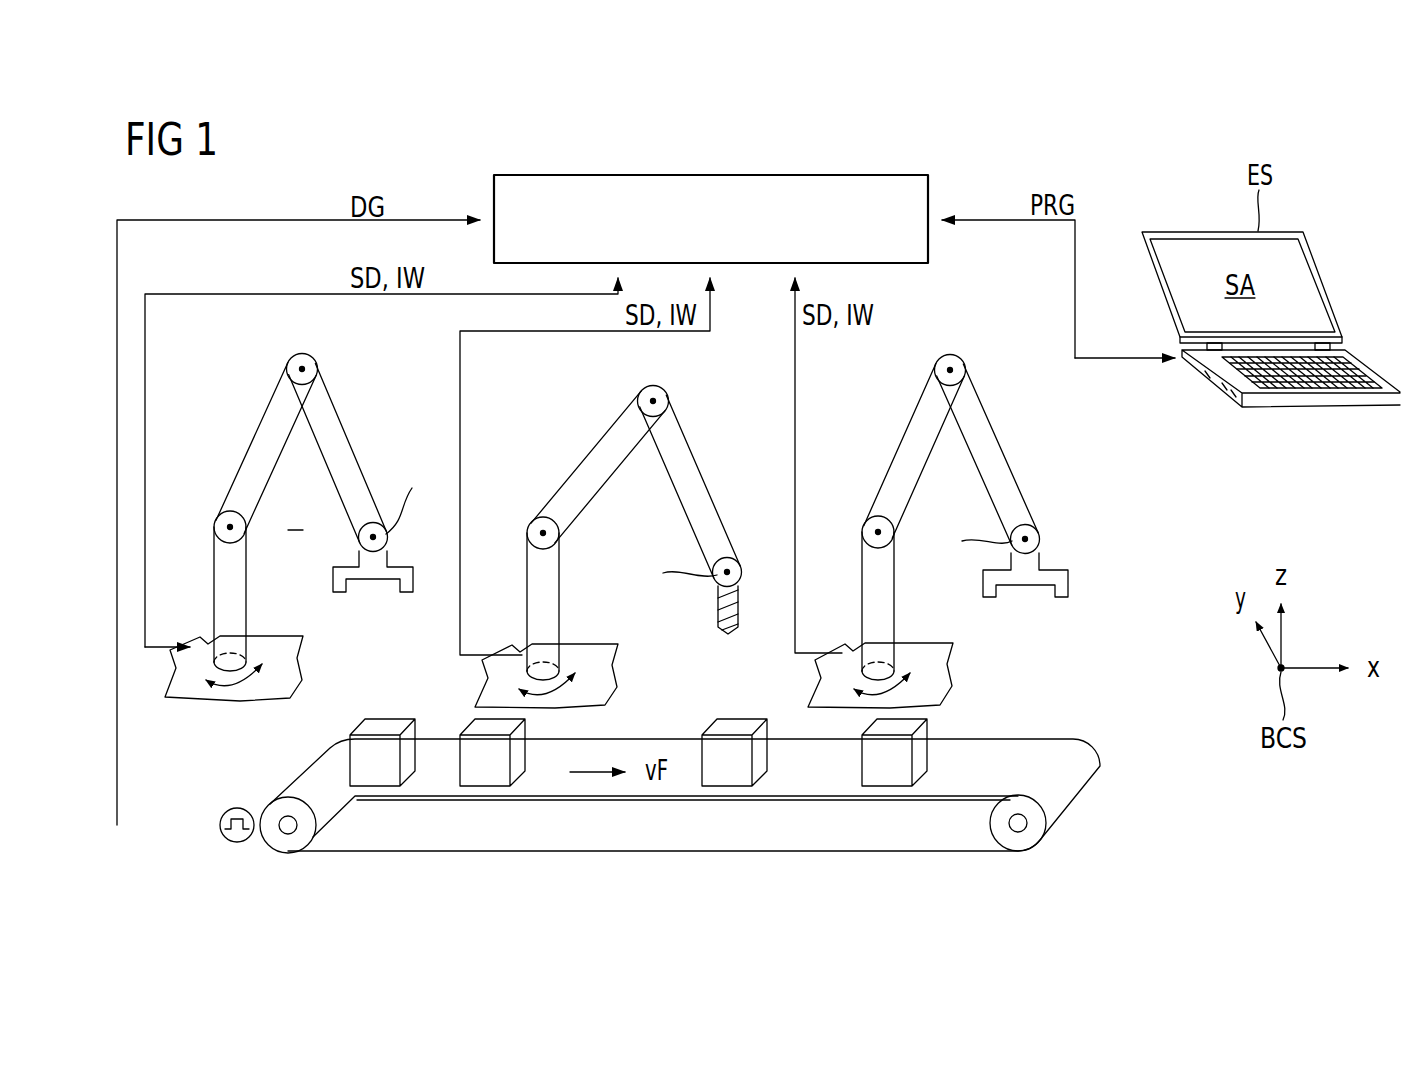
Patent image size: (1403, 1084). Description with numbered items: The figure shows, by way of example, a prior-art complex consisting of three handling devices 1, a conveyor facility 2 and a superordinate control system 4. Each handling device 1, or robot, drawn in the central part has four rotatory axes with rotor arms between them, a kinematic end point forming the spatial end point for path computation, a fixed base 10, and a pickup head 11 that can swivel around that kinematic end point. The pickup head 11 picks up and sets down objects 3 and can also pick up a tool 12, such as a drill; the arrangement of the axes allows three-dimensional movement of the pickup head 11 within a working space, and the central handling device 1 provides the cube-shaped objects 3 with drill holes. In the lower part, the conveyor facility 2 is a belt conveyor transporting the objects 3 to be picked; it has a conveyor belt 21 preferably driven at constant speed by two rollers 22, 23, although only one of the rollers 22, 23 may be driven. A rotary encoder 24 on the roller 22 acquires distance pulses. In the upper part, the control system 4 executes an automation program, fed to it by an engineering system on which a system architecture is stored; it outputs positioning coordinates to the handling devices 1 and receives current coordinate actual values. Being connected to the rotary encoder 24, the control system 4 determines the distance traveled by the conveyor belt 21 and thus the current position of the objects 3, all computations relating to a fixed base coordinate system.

The handling device 1 is at (382, 392).
The conveyor facility 2 is at (1028, 739).
The object 3 is at (382, 778).
The control system 4 is at (928, 245).
The fixed base 10 is at (190, 685).
The pickup head 11 is at (375, 568).
The tool 12 is at (718, 612).
The conveyor belt 21 is at (1040, 767).
The roller 22 is at (282, 840).
The roller 23 is at (1018, 824).
The rotary encoder 24 is at (222, 839).